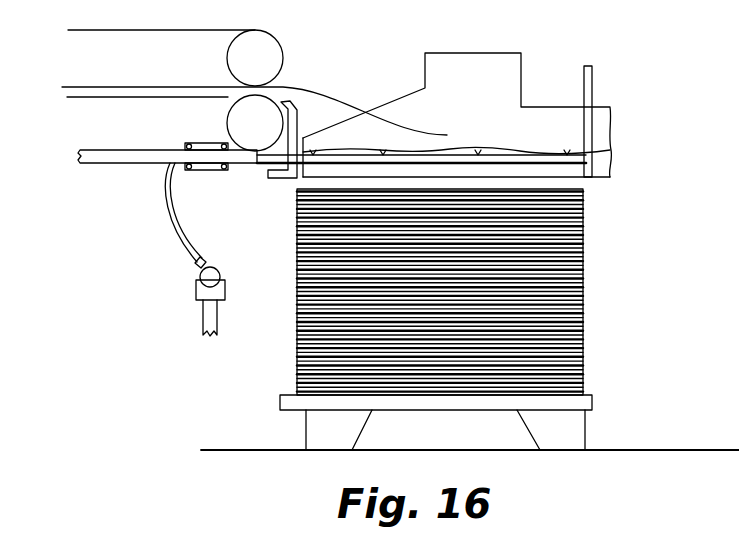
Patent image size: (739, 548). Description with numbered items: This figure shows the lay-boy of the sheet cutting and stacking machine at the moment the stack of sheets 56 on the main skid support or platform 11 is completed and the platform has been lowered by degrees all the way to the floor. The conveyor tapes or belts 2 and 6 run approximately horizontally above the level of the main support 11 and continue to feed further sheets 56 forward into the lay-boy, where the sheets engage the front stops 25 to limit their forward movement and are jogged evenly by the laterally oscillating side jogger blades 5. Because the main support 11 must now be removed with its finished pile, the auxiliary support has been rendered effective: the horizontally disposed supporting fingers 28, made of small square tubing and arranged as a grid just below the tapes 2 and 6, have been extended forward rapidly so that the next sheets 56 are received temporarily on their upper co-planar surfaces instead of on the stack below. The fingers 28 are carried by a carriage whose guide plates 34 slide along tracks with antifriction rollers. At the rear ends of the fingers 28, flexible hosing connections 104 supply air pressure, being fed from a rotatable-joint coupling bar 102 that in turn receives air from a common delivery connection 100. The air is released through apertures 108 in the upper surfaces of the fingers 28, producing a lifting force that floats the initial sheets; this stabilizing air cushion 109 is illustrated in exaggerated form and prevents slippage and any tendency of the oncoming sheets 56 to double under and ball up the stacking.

The conveyor tapes or belts 6 is at (190, 30).
The sheets 56 is at (155, 95).
The conveyor tapes or belts 2 is at (140, 150).
The guide plates 34 is at (195, 143).
The side jogger blades 5 is at (508, 67).
The front stops 25 is at (590, 86).
The apertures 108 is at (555, 161).
The air cushion 109 is at (568, 155).
The supporting fingers 28 is at (557, 165).
The flexible hosing connections 104 is at (172, 209).
The rotatable-joint coupling bar 102 is at (217, 273).
The common delivery connection 100 is at (208, 315).
The main skid support or platform 11 is at (588, 402).